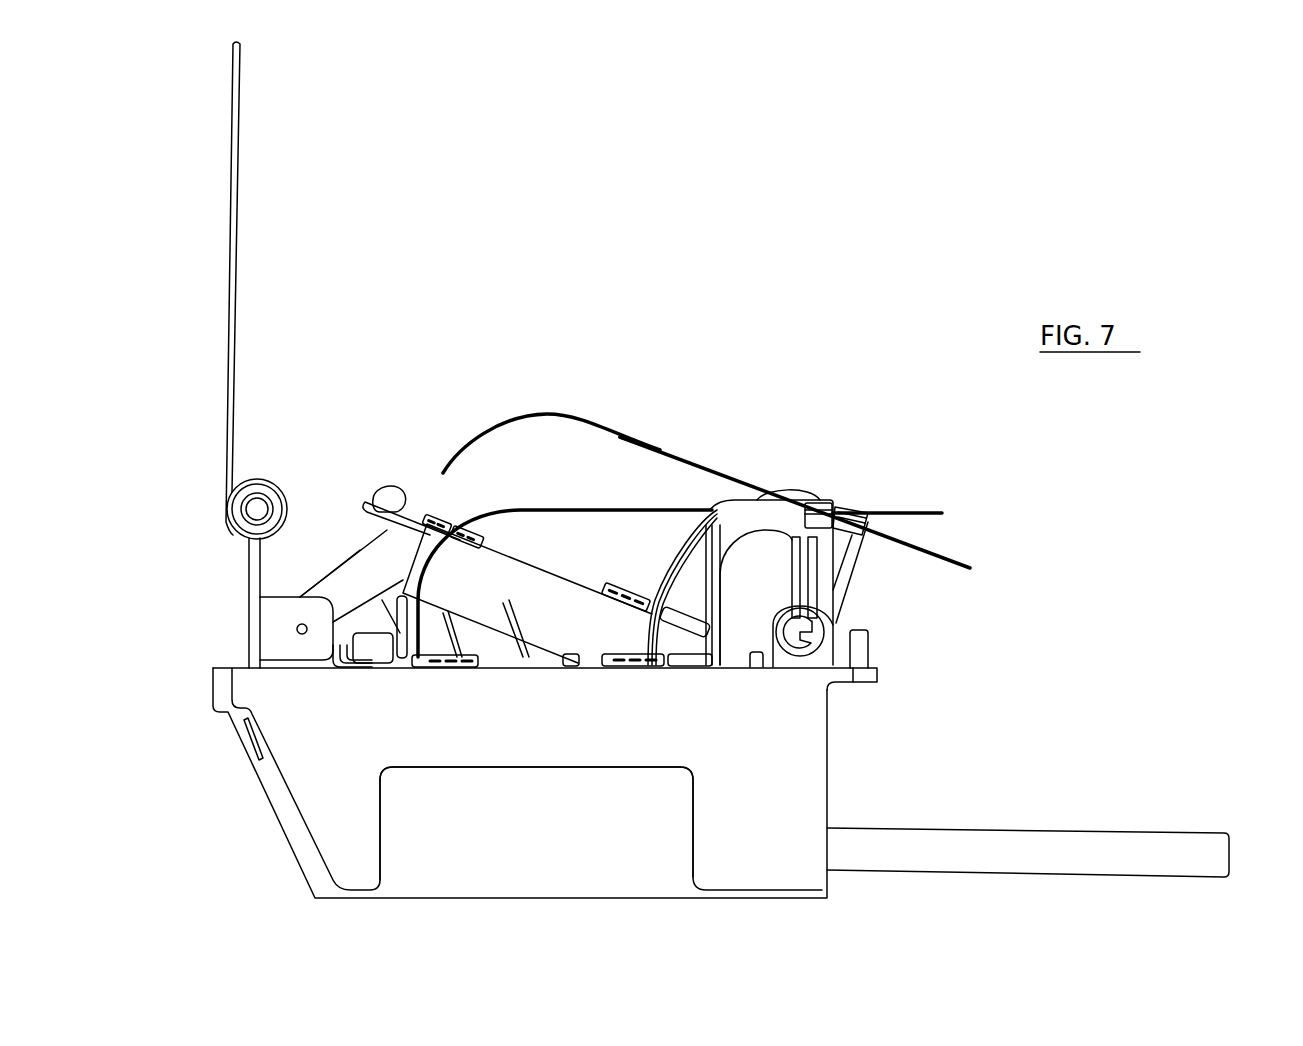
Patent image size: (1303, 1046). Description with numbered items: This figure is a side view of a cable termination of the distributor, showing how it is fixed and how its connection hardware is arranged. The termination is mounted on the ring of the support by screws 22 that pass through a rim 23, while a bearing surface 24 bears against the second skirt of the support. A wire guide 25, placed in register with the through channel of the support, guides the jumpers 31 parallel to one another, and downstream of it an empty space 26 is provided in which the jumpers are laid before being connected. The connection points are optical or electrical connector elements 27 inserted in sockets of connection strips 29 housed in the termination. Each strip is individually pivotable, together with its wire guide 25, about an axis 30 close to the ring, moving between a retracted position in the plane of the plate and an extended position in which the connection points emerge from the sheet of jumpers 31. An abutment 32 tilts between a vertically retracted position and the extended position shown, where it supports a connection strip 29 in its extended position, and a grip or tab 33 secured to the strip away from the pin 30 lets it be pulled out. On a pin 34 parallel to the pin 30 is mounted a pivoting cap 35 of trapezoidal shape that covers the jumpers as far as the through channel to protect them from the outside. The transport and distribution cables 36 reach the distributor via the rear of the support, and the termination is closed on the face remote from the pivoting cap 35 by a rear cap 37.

The screws 22 is at (862, 643).
The rim 23 is at (863, 680).
The bearing surface 24 is at (833, 748).
The wire guide 25 is at (763, 557).
The empty space 26 is at (522, 533).
The connector elements 27 is at (441, 530).
The connection strips 29 is at (548, 607).
The axis 30 is at (802, 643).
The jumpers 31 is at (605, 437).
The abutment 32 is at (375, 565).
The grip or tab 33 is at (388, 497).
The pin 34 is at (252, 508).
The pivoting cap 35 is at (232, 270).
The transport and distribution cables 36 is at (977, 843).
The rear cap 37 is at (592, 853).